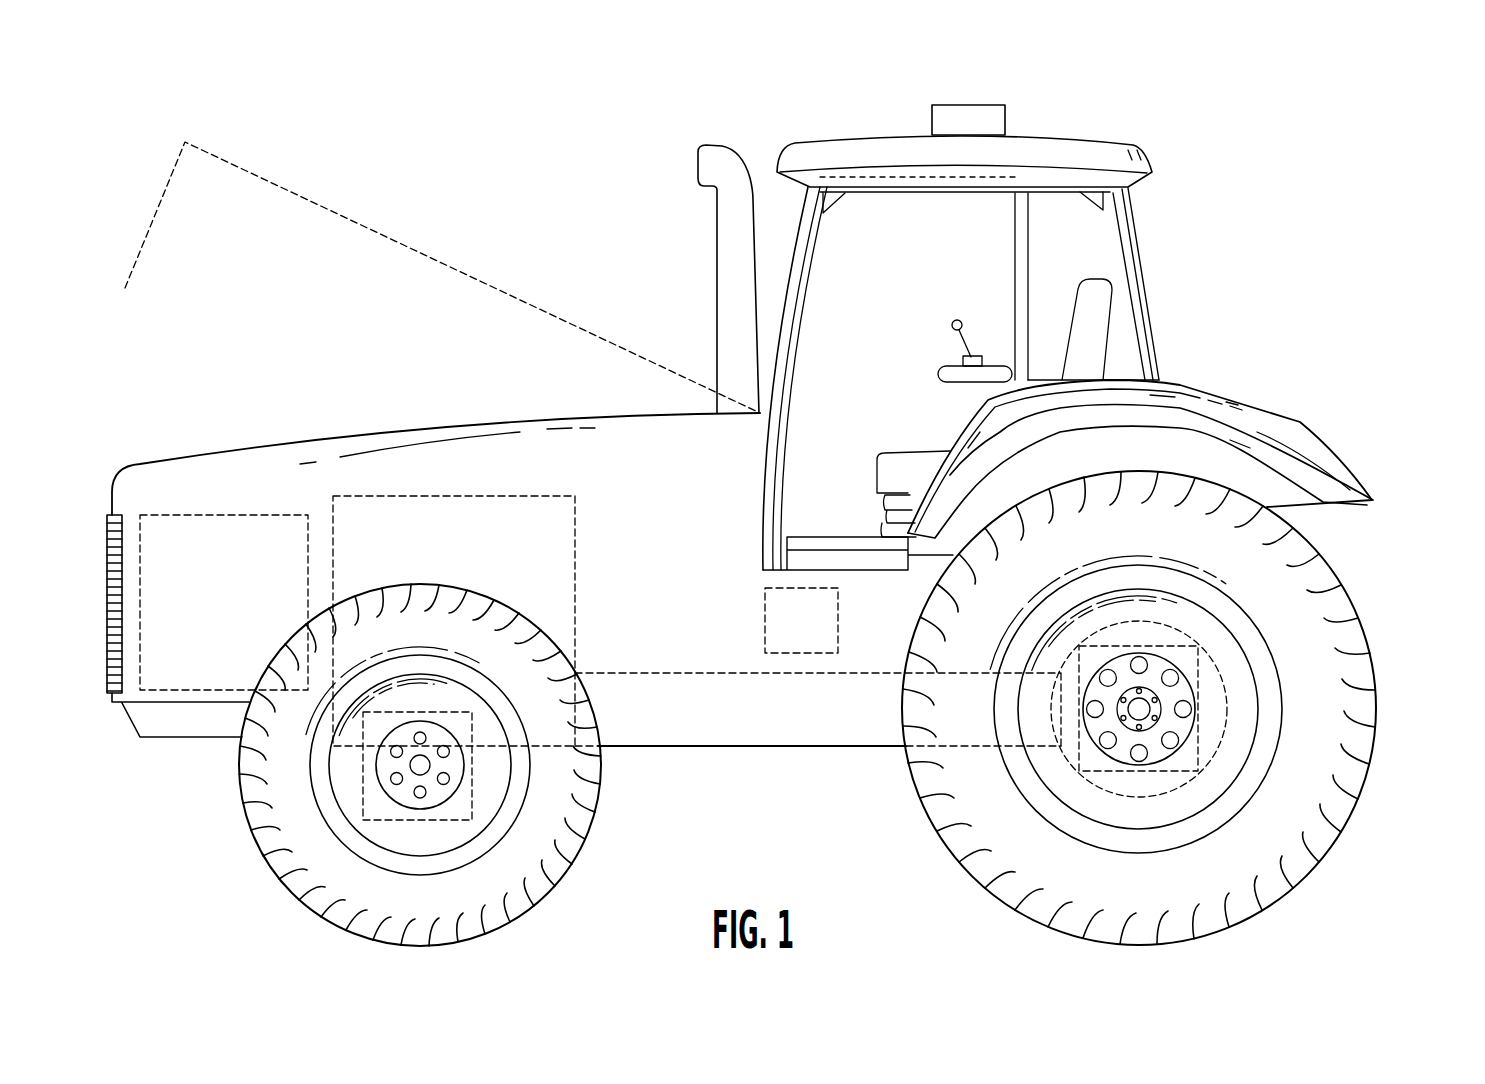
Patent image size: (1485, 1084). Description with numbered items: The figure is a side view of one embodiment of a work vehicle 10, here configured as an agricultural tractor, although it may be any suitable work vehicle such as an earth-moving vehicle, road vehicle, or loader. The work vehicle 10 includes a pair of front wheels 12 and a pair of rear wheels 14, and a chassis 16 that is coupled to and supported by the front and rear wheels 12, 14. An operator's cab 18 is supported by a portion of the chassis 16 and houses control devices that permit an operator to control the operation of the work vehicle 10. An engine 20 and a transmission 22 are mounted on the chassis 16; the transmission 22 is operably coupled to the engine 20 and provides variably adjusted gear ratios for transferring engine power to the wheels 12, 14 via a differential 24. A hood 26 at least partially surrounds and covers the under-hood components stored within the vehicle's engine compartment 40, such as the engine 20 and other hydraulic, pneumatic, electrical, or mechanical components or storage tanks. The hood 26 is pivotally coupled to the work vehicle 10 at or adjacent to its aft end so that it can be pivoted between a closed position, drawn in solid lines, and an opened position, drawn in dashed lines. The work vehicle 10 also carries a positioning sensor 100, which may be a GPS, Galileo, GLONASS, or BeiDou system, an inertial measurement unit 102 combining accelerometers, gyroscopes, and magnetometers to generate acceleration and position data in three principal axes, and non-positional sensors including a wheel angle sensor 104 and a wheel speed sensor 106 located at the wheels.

The work vehicle 10 is at (1302, 95).
The front wheels 12 is at (242, 787).
The rear wheels 14 is at (1372, 748).
The chassis 16 is at (688, 747).
The operator's cab 18 is at (1150, 289).
The engine 20 is at (410, 495).
The transmission 22 is at (743, 671).
The differential 24 is at (1209, 758).
The hood 26 is at (366, 212).
The engine compartment 40 is at (652, 482).
The positioning sensor 100 is at (967, 104).
The inertial measurement unit 102 is at (763, 618).
The wheel angle sensor 104 is at (912, 729).
The wheel speed sensor 106 is at (472, 777).